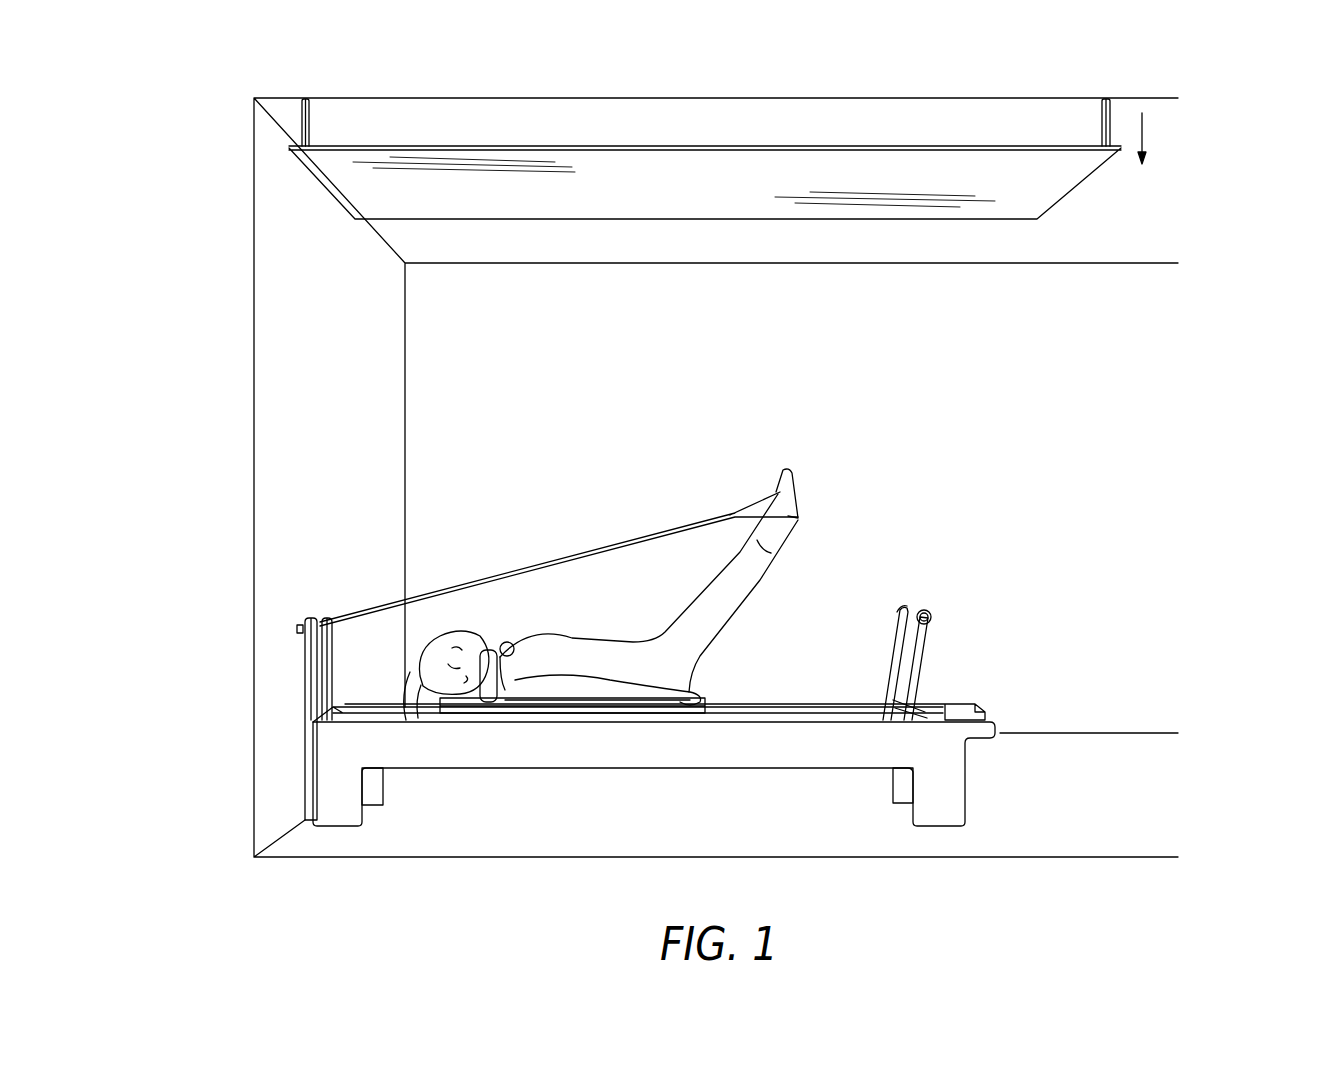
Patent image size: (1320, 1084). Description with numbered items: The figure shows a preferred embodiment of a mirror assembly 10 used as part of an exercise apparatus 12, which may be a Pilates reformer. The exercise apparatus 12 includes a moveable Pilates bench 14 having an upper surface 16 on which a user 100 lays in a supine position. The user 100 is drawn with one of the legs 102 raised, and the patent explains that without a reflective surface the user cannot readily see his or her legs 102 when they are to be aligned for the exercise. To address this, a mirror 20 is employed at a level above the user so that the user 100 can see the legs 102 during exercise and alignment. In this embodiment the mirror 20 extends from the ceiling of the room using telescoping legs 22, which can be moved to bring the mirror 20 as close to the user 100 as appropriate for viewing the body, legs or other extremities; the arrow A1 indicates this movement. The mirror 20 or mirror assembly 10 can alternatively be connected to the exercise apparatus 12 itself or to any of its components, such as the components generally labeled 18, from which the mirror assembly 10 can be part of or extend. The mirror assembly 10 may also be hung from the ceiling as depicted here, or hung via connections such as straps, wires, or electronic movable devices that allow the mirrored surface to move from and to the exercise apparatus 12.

The mirror assembly 10 is at (273, 84).
The exercise apparatus 12 is at (634, 616).
The Pilates bench 14 is at (690, 708).
The upper surface 16 is at (696, 697).
The components 18 is at (310, 665).
The mirror 20 is at (1062, 183).
The telescoping legs 22 is at (308, 125).
The arrow A1 is at (1144, 130).
The user 100 is at (621, 594).
The legs 102 is at (748, 570).